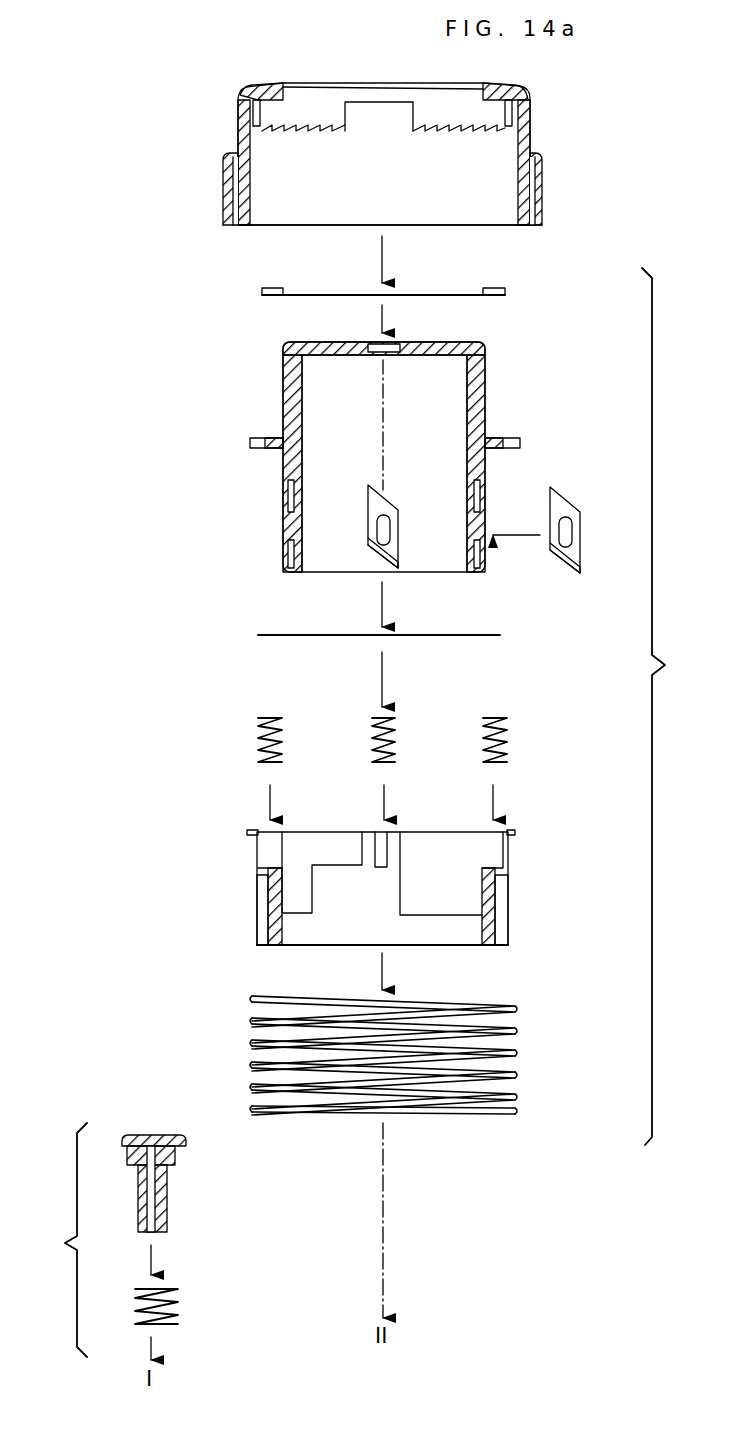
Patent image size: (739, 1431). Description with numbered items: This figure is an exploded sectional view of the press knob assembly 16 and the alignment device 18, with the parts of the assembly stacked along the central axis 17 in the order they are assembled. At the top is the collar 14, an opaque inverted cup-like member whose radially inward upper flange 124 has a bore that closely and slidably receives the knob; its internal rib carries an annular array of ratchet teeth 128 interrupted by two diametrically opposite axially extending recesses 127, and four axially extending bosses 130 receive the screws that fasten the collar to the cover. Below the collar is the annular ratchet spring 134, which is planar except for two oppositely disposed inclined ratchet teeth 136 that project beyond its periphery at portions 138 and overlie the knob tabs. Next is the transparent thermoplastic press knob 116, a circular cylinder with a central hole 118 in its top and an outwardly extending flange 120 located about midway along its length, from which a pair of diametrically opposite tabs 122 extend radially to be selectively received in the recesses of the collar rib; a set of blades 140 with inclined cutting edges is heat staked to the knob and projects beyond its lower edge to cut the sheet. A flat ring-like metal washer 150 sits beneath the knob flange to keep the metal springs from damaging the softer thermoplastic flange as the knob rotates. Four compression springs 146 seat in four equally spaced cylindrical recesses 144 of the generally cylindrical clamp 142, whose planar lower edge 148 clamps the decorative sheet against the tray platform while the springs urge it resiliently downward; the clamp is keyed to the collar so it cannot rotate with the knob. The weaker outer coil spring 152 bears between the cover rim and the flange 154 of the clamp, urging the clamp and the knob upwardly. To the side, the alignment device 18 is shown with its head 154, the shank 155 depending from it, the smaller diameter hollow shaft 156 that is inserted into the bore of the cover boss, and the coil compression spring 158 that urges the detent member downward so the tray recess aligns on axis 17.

The collar 14 is at (532, 140).
The press knob assembly 16 is at (669, 706).
The axis 17 is at (382, 388).
The alignment device 18 is at (57, 1240).
The press knob 116 is at (487, 344).
The central hole 118 is at (388, 343).
The flange 120 is at (473, 112).
The tabs 122 is at (250, 442).
The flange 124 is at (268, 84).
The recesses 127 is at (393, 113).
The ratchet teeth 128 is at (316, 133).
The bosses 130 is at (225, 186).
The ratchet spring 134 is at (345, 262).
The ratchet teeth 136 is at (500, 288).
The portions 138 is at (262, 289).
The blades 140 is at (400, 510).
The clamp 142 is at (257, 893).
The cylindrical recesses 144 is at (262, 848).
The compression springs 146 is at (258, 738).
The lower edge 148 is at (303, 945).
The washer 150 is at (258, 635).
The outer coil spring 152 is at (515, 1086).
The flange / head 154 is at (512, 832).
The shank 155 is at (176, 1160).
The hollow shaft 156 is at (167, 1226).
The coil compression spring 158 is at (178, 1305).